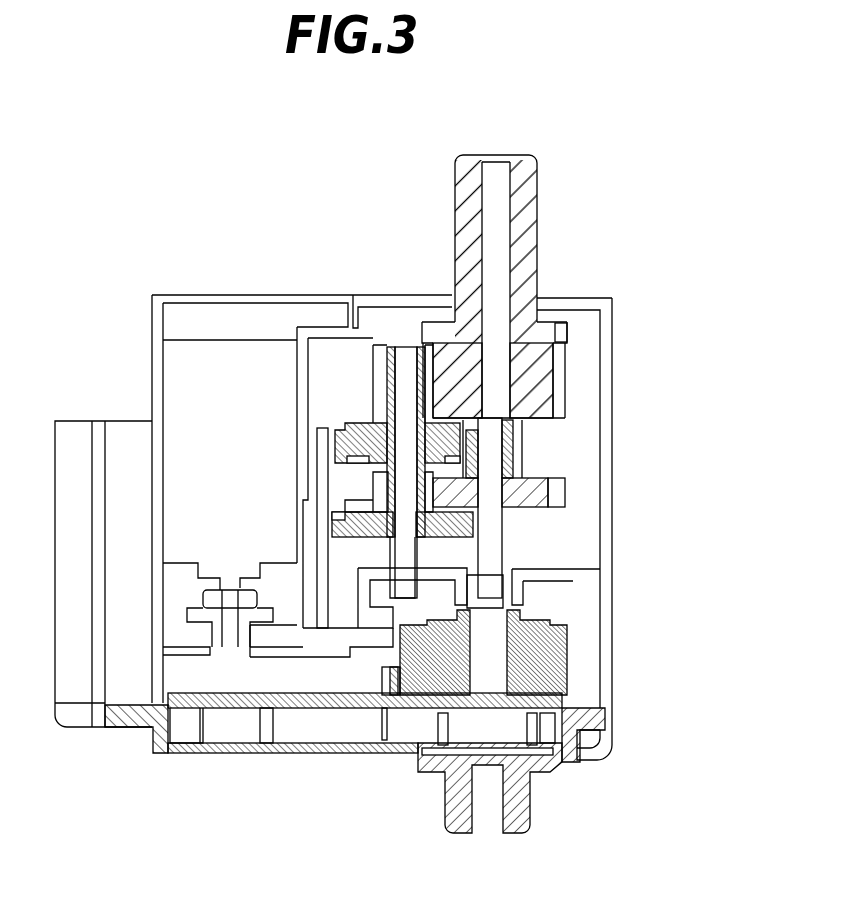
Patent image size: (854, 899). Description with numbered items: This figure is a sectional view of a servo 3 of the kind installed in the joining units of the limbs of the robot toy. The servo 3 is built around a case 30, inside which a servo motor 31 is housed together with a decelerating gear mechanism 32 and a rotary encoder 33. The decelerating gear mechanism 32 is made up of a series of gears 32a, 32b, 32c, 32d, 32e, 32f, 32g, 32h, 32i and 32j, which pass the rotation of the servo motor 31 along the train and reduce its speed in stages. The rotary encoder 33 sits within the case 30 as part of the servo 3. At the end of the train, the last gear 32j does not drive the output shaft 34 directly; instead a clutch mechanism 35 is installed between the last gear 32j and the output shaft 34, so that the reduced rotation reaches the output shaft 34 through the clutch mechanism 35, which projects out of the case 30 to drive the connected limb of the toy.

The servo 3 is at (313, 291).
The case 30 is at (197, 291).
The servo motor 31 is at (185, 388).
The decelerating gear mechanism 32 is at (550, 512).
The gear 32a is at (217, 642).
The gear 32b is at (370, 638).
The gear 32c is at (308, 583).
The gear 32d is at (360, 528).
The gear 32e is at (388, 490).
The gear 32f is at (547, 494).
The gear 32g is at (508, 455).
The gear 32h is at (360, 428).
The gear 32i is at (385, 347).
The last gear 32j is at (547, 377).
The rotary encoder 33 is at (572, 655).
The output shaft 34 is at (530, 170).
The clutch mechanism 35 is at (560, 318).